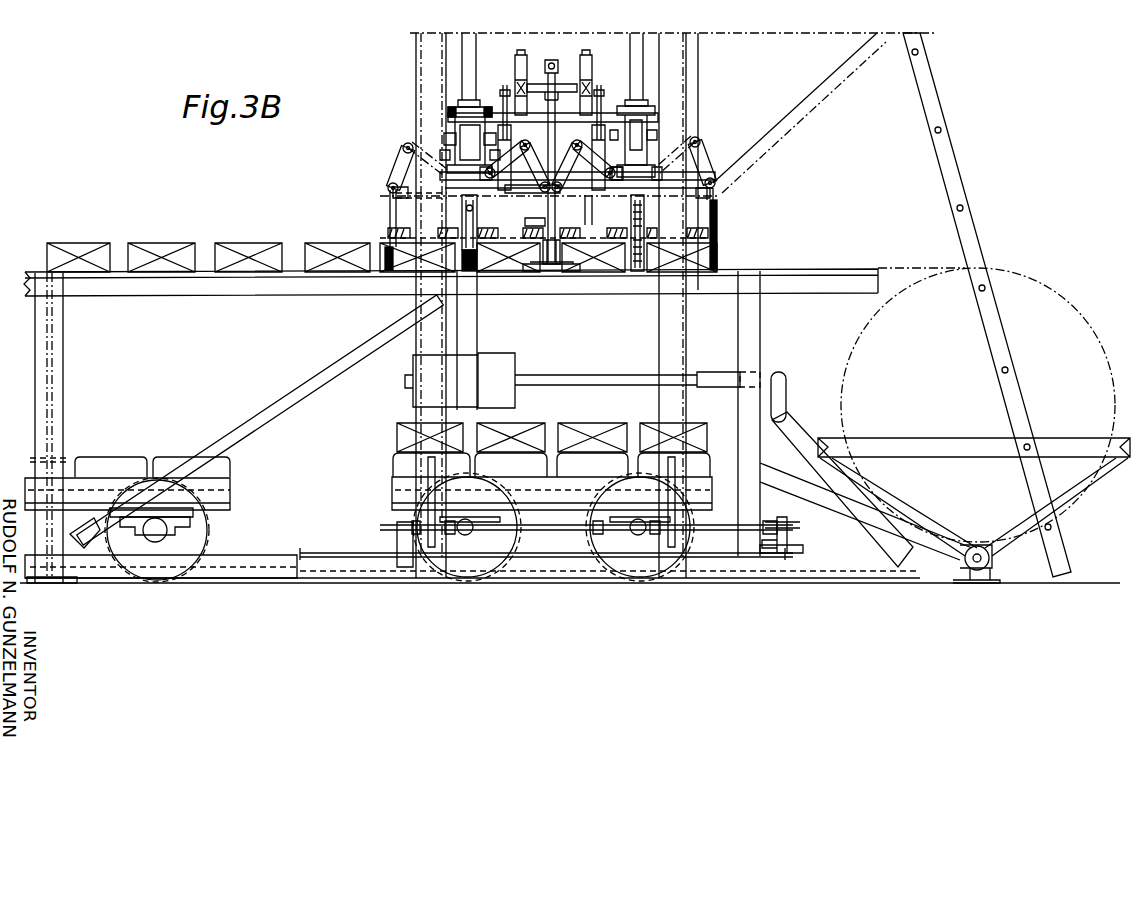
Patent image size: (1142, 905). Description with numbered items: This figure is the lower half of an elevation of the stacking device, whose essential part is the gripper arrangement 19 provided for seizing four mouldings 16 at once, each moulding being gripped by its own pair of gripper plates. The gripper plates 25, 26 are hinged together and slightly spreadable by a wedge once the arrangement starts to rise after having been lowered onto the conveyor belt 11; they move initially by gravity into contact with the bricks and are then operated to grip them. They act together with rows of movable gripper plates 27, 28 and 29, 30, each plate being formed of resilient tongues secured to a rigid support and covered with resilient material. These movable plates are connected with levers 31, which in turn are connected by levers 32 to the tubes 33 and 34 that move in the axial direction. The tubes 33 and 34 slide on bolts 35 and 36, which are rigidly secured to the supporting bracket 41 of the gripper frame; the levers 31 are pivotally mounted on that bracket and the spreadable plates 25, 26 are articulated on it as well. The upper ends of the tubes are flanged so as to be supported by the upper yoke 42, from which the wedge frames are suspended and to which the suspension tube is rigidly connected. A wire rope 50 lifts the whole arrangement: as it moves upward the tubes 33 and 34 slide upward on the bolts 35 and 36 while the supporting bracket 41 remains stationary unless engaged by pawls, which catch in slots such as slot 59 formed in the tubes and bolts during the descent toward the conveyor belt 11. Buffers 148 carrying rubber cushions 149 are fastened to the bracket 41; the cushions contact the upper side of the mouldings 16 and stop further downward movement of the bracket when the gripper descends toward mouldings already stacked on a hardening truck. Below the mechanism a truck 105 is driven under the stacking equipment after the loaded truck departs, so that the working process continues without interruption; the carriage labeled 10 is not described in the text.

The carriage 10 is at (390, 488).
The conveyor belt 11 is at (923, 268).
The mouldings 16 is at (400, 252).
The gripper arrangement 19 is at (364, 186).
The gripper plate 25 is at (465, 233).
The gripper plate 26 is at (644, 223).
The gripper plate 27 is at (385, 262).
The gripper plate 28 is at (560, 266).
The gripper plate 29 is at (570, 268).
The gripper plate 30 is at (717, 262).
The levers 31 is at (397, 168).
The levers 32 is at (427, 142).
The tube 33 is at (615, 142).
The tube 34 is at (497, 132).
The bolt 35 is at (588, 226).
The bolt 36 is at (442, 123).
The supporting bracket 41 is at (405, 198).
The upper yoke 42 is at (590, 118).
The wire rope 50 is at (610, 173).
The slot 59 is at (458, 137).
The truck 105 is at (156, 443).
The buffers 148 is at (527, 221).
The rubber cushions 149 is at (540, 224).